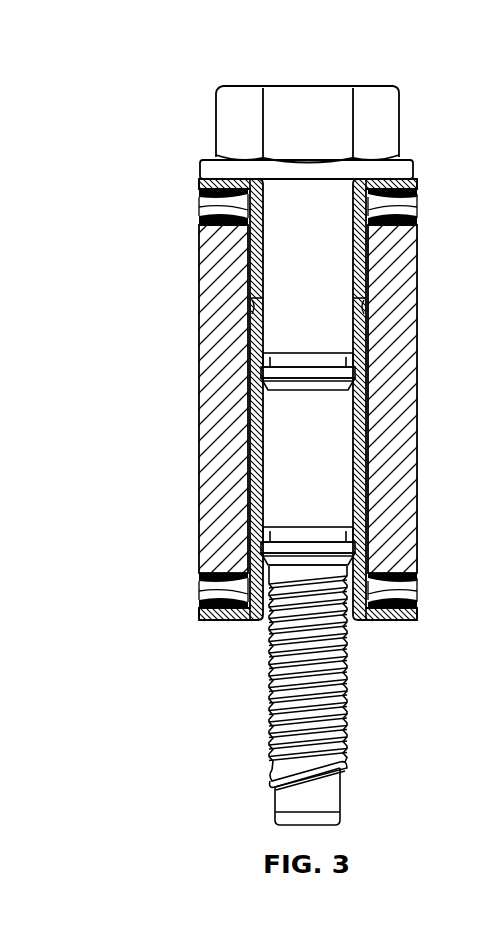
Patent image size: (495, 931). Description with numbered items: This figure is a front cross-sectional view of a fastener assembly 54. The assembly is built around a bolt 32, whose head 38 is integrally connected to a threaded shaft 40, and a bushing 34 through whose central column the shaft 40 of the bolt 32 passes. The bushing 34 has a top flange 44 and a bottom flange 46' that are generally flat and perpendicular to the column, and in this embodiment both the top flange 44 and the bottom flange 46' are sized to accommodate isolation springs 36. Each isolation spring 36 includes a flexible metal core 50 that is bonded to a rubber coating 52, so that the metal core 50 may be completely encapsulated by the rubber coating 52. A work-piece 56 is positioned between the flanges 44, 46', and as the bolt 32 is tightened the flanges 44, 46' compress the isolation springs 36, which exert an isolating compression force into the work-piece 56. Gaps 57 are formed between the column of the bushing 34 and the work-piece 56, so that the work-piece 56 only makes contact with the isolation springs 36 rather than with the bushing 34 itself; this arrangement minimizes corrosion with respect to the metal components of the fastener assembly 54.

The fastener assembly 54 is at (146, 47).
The head 38 is at (347, 84).
The bolt 32 is at (392, 130).
The bushing 34 is at (412, 184).
The top flange 44 is at (200, 183).
The bottom flange 46' is at (271, 614).
The rubber coating 52 is at (200, 222).
The isolation spring 36 is at (200, 238).
The flexible metal core 50 is at (230, 218).
The work-piece 56 is at (402, 370).
The gaps 57 is at (250, 464).
The threaded shaft 40 is at (268, 722).